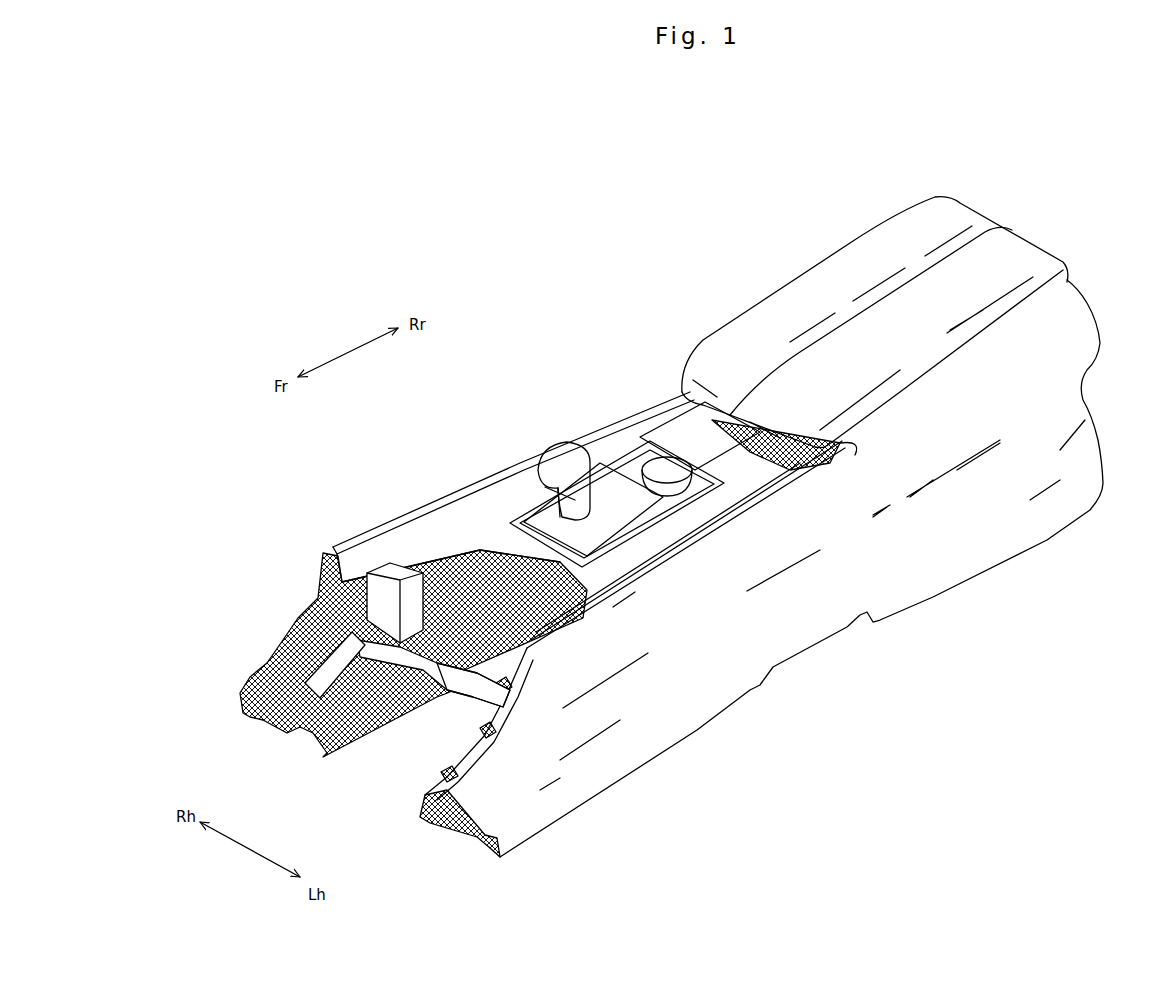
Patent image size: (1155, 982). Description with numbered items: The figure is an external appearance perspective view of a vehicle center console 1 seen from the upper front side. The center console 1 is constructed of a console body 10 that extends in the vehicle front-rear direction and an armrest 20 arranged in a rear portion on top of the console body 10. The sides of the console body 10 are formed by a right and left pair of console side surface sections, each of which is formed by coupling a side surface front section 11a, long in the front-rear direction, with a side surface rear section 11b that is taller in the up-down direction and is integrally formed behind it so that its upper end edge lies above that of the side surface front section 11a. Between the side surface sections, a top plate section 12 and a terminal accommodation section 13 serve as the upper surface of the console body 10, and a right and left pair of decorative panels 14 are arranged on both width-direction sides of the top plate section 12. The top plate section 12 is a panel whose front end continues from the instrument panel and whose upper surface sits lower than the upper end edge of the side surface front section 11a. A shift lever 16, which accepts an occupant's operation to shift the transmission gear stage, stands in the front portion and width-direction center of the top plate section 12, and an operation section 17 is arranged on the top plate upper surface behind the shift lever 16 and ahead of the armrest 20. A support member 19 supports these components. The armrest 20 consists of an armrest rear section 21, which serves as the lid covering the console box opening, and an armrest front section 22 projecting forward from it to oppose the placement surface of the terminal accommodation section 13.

The center console 1 is at (521, 260).
The console body 10 is at (934, 601).
The side surface front section 11a is at (637, 723).
The side surface rear section 11b is at (1055, 495).
The top plate section 12 is at (500, 515).
The terminal accommodation section 13 is at (683, 433).
The decorative panel 14 is at (385, 545).
The shift lever 16 is at (553, 450).
The operation section 17 is at (630, 430).
The support member 19 is at (455, 695).
The armrest 20 is at (845, 248).
The armrest rear section 21 is at (997, 262).
The armrest front section 22 is at (703, 365).